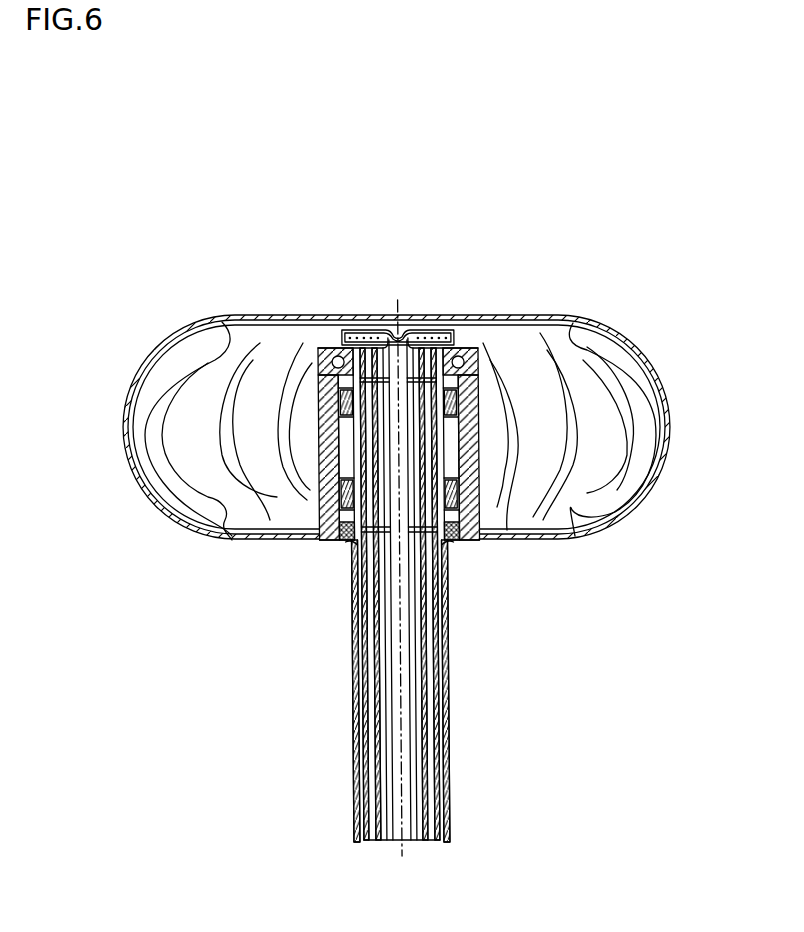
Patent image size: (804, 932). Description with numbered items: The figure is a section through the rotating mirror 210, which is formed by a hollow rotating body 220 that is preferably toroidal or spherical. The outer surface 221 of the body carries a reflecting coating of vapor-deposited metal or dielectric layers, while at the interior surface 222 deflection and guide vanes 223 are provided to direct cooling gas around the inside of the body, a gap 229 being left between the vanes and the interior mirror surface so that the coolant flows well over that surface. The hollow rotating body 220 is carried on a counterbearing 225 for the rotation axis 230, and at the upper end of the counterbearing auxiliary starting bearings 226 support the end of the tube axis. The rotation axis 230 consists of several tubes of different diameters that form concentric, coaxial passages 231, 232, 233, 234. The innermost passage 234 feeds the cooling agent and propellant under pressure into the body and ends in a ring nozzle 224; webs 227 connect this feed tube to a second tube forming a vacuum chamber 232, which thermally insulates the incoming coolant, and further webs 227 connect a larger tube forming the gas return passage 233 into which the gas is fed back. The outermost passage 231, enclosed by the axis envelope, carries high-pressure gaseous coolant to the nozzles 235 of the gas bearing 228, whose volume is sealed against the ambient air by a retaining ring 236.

The pressure sensor body 210 is at (610, 320).
The hollow rotating body 220 is at (517, 497).
The outer surface 221 is at (648, 362).
The interior surface 222 is at (663, 398).
The deflection and guide vanes 223 is at (617, 490).
The ring nozzle 224 is at (440, 337).
The counterbearing 225 is at (337, 512).
The bearing housing 226 is at (323, 350).
The webs 227 is at (410, 340).
The gas bearing 228 is at (337, 402).
The gap 229 is at (663, 440).
The rotation axis 230 is at (351, 570).
The passage 231 is at (362, 655).
The vacuum chamber 232 is at (375, 703).
The gas return passage 233 is at (412, 673).
The innermost passage 234 is at (402, 702).
The nozzles 235 is at (363, 346).
The retaining ring 236 is at (467, 540).